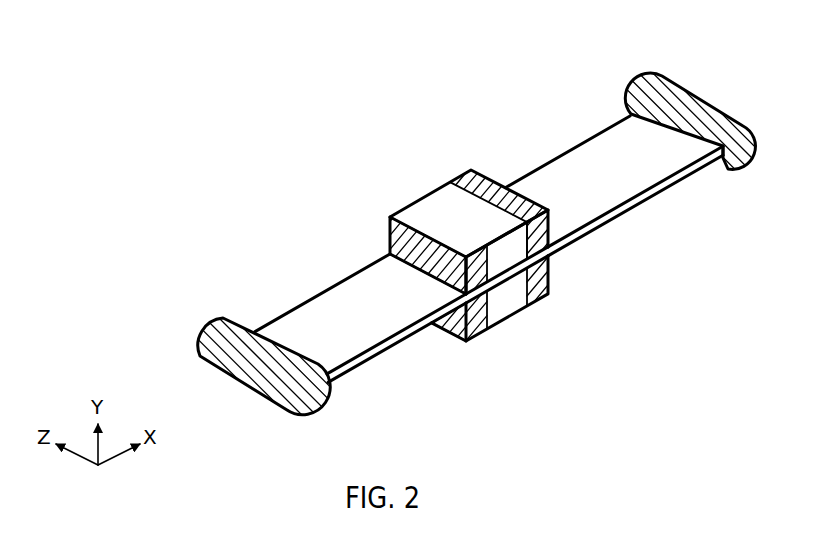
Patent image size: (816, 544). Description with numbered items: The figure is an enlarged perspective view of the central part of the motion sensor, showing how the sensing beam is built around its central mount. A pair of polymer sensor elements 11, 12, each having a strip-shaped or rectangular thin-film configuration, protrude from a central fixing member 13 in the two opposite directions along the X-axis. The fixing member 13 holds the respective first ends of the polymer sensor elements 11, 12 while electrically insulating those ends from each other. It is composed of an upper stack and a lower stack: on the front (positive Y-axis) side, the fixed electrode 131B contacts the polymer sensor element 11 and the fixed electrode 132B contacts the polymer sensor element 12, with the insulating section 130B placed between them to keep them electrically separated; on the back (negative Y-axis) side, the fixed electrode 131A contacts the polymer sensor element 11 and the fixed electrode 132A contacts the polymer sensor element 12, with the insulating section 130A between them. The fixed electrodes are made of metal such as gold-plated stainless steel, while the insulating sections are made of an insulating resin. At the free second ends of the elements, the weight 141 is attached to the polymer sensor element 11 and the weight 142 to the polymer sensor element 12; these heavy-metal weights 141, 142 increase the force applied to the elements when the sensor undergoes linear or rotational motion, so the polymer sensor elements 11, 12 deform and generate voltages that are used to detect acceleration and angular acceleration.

The fixing member 13 is at (318, 74).
The polymer sensor element 11 is at (323, 300).
The polymer sensor element 12 is at (573, 158).
The weight 141 is at (215, 332).
The weight 142 is at (653, 85).
The insulating section 130B is at (443, 198).
The fixed electrode 131B is at (401, 212).
The fixed electrode 132B is at (474, 176).
The insulating section 130A is at (512, 310).
The fixed electrode 131A is at (477, 332).
The fixed electrode 132A is at (547, 283).